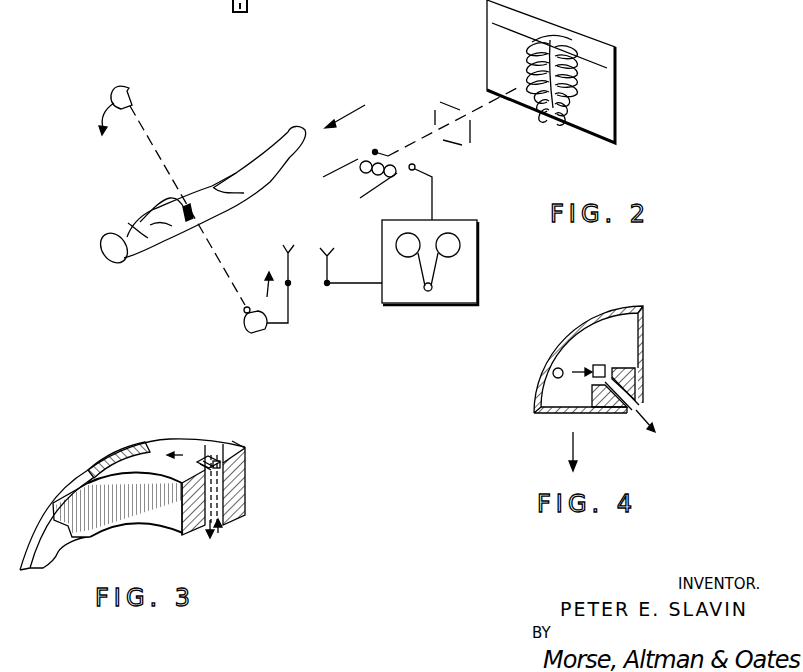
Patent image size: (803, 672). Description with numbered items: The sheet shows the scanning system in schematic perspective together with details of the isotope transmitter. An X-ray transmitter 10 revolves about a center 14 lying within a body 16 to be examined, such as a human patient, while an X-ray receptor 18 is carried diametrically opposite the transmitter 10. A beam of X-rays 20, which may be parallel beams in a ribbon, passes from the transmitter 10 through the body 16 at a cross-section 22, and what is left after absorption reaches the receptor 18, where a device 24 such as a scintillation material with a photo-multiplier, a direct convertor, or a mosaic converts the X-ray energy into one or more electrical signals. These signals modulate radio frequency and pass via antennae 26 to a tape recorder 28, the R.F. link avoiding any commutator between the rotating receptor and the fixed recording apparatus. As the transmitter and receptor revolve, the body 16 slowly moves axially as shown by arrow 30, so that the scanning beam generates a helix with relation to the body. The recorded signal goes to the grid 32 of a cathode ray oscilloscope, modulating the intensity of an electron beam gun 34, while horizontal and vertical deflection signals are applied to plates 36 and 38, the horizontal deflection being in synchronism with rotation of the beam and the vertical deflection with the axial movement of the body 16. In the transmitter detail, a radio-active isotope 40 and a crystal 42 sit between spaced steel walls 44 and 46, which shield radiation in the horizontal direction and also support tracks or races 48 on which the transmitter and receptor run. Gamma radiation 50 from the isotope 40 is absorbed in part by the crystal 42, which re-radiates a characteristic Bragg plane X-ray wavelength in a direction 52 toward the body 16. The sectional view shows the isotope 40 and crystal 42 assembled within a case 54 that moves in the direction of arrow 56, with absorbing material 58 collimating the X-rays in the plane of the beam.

In FIG. 2, the X-ray transmitter 10 is at (131, 92).
In FIG. 2, the center 14 is at (192, 223).
In FIG. 2, the body 16 is at (241, 162).
In FIG. 2, the X-ray receptor 18 is at (258, 333).
In FIG. 2, the beam of X-rays 20 is at (155, 148).
In FIG. 2, the cross-section 22 is at (167, 226).
In FIG. 2, the device 24 is at (243, 314).
In FIG. 2, the antennae 26 is at (288, 246).
In FIG. 2, the tape recorder 28 is at (478, 242).
In FIG. 2, the arrow 30 is at (350, 114).
In FIG. 2, the grid 32 is at (375, 151).
In FIG. 2, the electron beam gun 34 is at (343, 169).
In FIG. 2, the plates 36 is at (434, 112).
In FIG. 2, the plates 38 is at (452, 147).
In FIG. 4, the radio-active isotope 40 is at (544, 370).
In FIG. 3, the radio-active isotope 40 is at (205, 455).
In FIG. 4, the crystal 42 is at (599, 365).
In FIG. 3, the crystal 42 is at (224, 464).
In FIG. 3, the wall 44 is at (167, 527).
In FIG. 3, the wall 46 is at (248, 497).
In FIG. 3, the tracks or races 48 is at (147, 450).
In FIG. 4, the gamma radiation 50 is at (577, 371).
In FIG. 3, the gamma radiation 50 is at (217, 448).
In FIG. 4, the direction 52 is at (640, 411).
In FIG. 3, the direction 52 is at (220, 534).
In FIG. 4, the case 54 is at (615, 309).
In FIG. 4, the arrow 56 is at (573, 441).
In FIG. 4, the absorbing material 58 is at (624, 378).